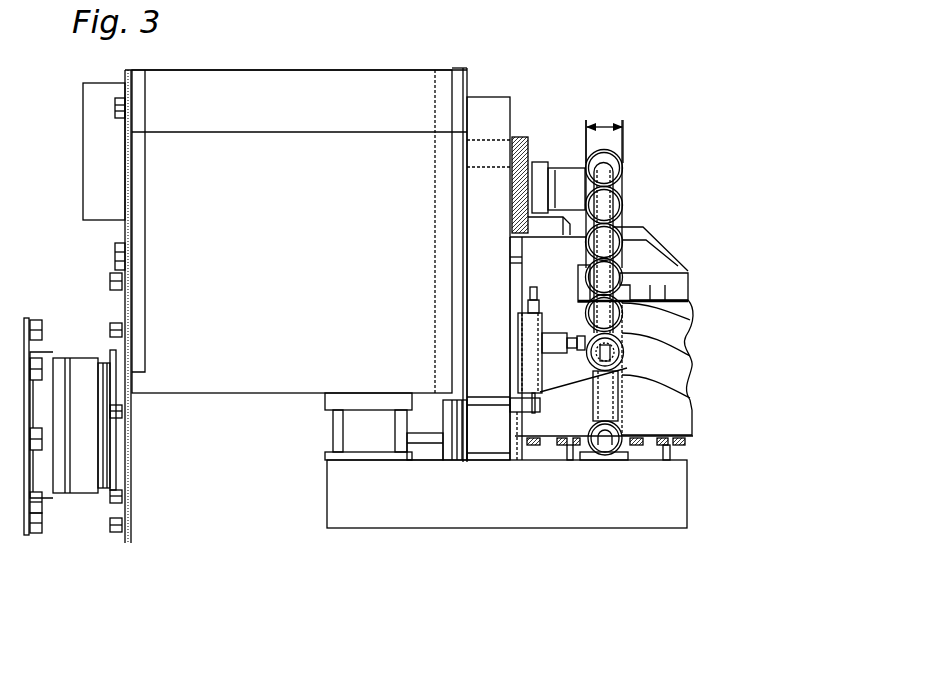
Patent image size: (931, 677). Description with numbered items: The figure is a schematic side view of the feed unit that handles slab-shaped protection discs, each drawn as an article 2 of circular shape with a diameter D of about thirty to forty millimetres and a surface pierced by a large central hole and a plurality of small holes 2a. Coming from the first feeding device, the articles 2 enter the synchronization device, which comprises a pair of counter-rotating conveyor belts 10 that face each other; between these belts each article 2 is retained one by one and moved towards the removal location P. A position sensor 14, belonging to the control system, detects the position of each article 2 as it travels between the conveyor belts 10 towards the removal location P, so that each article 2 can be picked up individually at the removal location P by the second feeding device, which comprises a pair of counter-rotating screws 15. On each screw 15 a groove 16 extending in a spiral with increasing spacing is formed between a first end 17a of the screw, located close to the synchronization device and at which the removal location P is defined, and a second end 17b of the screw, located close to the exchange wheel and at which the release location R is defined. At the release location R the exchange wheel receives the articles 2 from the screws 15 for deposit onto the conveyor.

The position sensor 14 is at (614, 228).
The article 2 is at (620, 240).
The counter-rotating conveyor belts 10 is at (606, 278).
The first end of the screw 17a is at (690, 273).
The groove 16 is at (690, 334).
The small holes 2a is at (607, 353).
The counter-rotating screws 15 is at (690, 404).
The second end of the screw 17b is at (667, 445).
The diameter D is at (605, 120).
The removal location P is at (586, 312).
The release location R is at (597, 413).